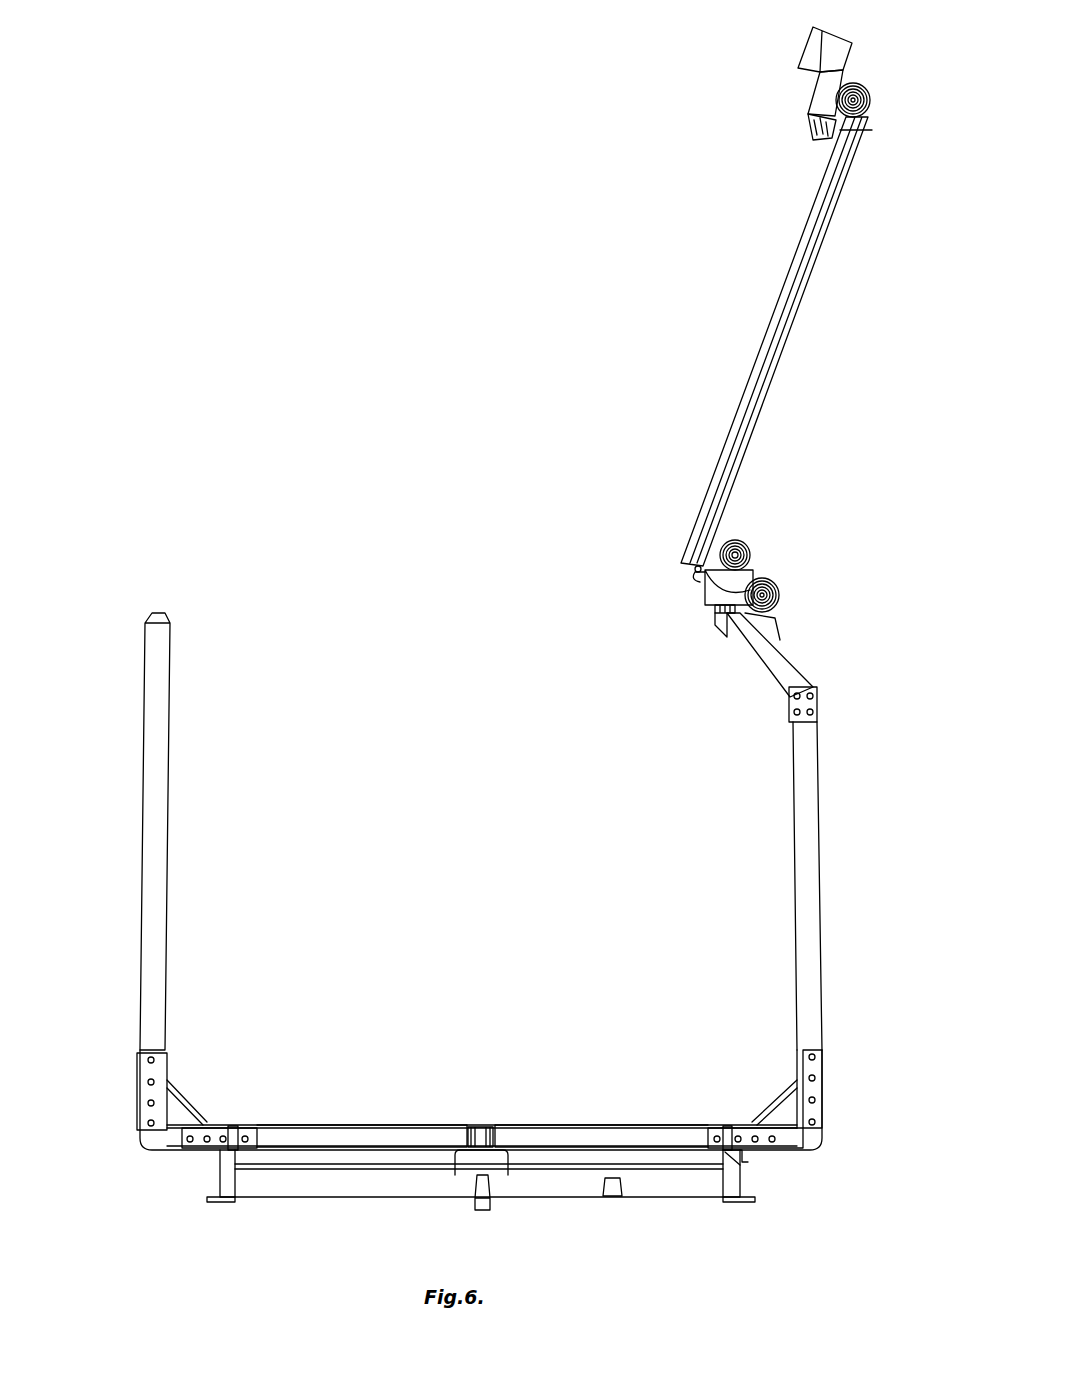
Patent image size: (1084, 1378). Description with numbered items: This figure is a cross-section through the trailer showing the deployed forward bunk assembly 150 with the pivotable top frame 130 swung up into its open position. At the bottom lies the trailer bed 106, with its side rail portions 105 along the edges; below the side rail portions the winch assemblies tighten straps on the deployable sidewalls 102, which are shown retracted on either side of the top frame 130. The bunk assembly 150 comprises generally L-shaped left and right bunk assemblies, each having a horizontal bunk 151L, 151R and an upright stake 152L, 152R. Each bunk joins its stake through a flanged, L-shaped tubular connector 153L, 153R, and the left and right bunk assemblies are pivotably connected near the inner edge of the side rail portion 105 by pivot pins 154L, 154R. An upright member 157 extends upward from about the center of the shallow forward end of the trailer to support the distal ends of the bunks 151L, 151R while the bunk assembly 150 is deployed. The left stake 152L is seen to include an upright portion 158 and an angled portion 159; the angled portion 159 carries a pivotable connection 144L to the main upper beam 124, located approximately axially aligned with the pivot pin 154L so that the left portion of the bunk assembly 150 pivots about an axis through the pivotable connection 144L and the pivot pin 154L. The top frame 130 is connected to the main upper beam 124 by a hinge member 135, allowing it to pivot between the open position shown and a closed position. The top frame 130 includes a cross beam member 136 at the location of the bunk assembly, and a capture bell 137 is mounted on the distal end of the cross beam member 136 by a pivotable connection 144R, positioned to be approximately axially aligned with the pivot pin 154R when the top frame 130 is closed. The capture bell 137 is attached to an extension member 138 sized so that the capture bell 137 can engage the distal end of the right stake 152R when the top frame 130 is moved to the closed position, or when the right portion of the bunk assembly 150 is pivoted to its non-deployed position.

The deployable sidewall 102 is at (862, 85).
The side rail portion 105 is at (740, 1175).
The trailer bed 106 is at (516, 1206).
The main upper beam 124 is at (735, 572).
The pivotable top frame 130 is at (809, 290).
The hinge member 135 is at (703, 590).
The cross beam member 136 is at (775, 335).
The capture bell 137 is at (805, 45).
The extension member 138 is at (808, 95).
The pivotable connection 144R is at (822, 140).
The pivotable connection 144L is at (727, 632).
The first bunk assembly 150 is at (491, 926).
The horizontal bunk 151R is at (357, 1135).
The horizontal bunk 151L is at (607, 1135).
The upright stake 152R is at (148, 808).
The upright stake 152L is at (810, 828).
The tubular connector 153R is at (175, 1103).
The tubular connector 153L is at (785, 1105).
The pivot pin 154R is at (233, 1126).
The pivot pin 154L is at (728, 1126).
The upright member 157 is at (492, 1152).
The upright portion 158 is at (815, 932).
The angled portion 159 is at (795, 680).